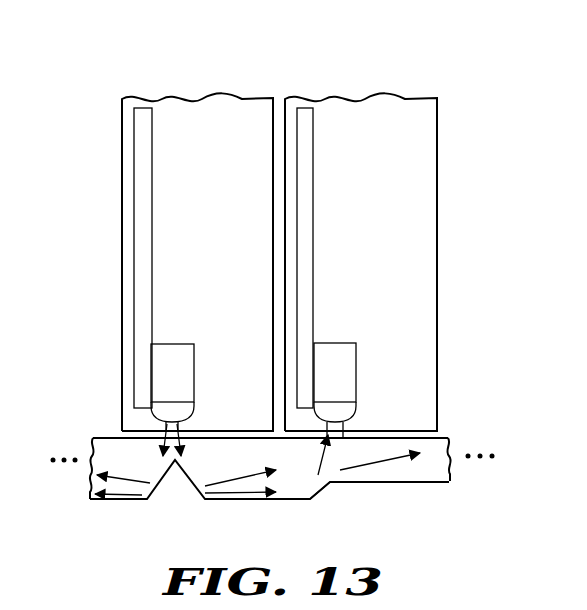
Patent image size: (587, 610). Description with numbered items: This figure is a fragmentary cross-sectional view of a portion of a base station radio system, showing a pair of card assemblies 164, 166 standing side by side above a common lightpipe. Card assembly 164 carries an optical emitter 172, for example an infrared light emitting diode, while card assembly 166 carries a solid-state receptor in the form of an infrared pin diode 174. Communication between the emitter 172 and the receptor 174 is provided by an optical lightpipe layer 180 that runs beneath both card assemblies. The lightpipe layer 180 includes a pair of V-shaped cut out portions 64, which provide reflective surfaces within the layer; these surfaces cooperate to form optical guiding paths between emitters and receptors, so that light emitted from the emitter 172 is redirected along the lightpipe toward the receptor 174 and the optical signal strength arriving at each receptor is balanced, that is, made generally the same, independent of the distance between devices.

The V-shaped cut out portion 64 is at (175, 473).
The card assembly 164 is at (197, 118).
The card assembly 166 is at (362, 115).
The optical emitter 172 is at (175, 369).
The infrared pin diode 174 is at (337, 372).
The optical lightpipe layer 180 is at (297, 467).